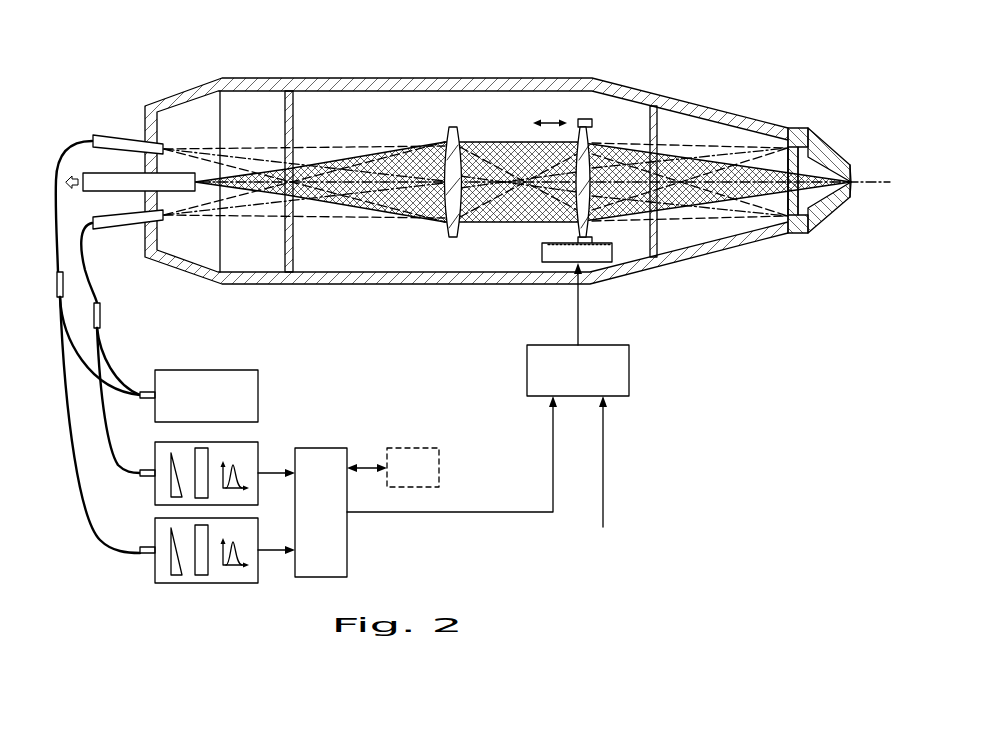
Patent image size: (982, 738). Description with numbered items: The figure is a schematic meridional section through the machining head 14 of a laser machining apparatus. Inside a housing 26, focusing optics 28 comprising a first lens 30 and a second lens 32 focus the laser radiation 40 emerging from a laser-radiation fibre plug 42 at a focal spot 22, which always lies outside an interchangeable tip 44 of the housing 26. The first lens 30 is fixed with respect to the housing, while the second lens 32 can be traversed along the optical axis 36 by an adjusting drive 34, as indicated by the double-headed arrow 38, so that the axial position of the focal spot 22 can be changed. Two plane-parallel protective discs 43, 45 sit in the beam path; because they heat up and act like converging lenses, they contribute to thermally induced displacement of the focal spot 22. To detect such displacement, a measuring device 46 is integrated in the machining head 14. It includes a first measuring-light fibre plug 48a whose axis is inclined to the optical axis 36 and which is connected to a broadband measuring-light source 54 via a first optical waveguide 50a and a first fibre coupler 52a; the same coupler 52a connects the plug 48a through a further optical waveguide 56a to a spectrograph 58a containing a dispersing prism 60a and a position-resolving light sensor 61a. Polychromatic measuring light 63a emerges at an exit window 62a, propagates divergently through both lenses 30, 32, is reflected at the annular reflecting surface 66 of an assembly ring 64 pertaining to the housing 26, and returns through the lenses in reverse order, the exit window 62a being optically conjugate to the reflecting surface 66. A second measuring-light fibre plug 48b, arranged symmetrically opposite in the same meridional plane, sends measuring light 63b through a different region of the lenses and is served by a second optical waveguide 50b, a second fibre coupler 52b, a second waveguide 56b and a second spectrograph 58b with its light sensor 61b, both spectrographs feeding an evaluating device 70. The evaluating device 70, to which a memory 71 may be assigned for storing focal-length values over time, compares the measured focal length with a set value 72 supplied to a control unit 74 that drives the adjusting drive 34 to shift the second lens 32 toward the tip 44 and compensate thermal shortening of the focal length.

The machining head 14 is at (729, 328).
The focal spot 22 is at (865, 178).
The housing 26 is at (253, 72).
The focusing optics 28 is at (470, 118).
The first lens 30 is at (445, 140).
The second lens 32 is at (592, 136).
The adjusting drive 34 is at (542, 252).
The optical axis 36 is at (865, 190).
The double-headed arrow 38 is at (548, 118).
The laser radiation 40 is at (325, 197).
The laser-radiation fibre plug 42 is at (98, 186).
The protective disc 43 is at (288, 112).
The interchangeable tip 44 is at (820, 150).
The protective disc 45 is at (656, 130).
The measuring device 46 is at (130, 114).
The first measuring-light fibre plug 48a is at (110, 140).
The second measuring-light fibre plug 48b is at (105, 224).
The first optical waveguide 50a is at (60, 150).
The second optical waveguide 50b is at (98, 274).
The first fibre coupler 52a is at (55, 285).
The second fibre coupler 52b is at (101, 316).
The measuring-light source 54 is at (205, 385).
The further optical waveguide 56a is at (98, 540).
The second optical waveguide 56b is at (113, 462).
The spectrograph 58a is at (163, 578).
The second spectrograph 58b is at (167, 453).
The prism 60a is at (176, 575).
The light sensor 61a is at (202, 576).
The light sensor 61b is at (200, 446).
The exit window 62a is at (168, 144).
The measuring light 63a is at (250, 146).
The measuring light 63b is at (250, 218).
The assembly ring 64 is at (800, 233).
The reflecting surface 66 is at (786, 224).
The evaluating device 70 is at (322, 455).
The memory 71 is at (405, 448).
The set value 72 is at (604, 475).
The control unit 74 is at (605, 350).